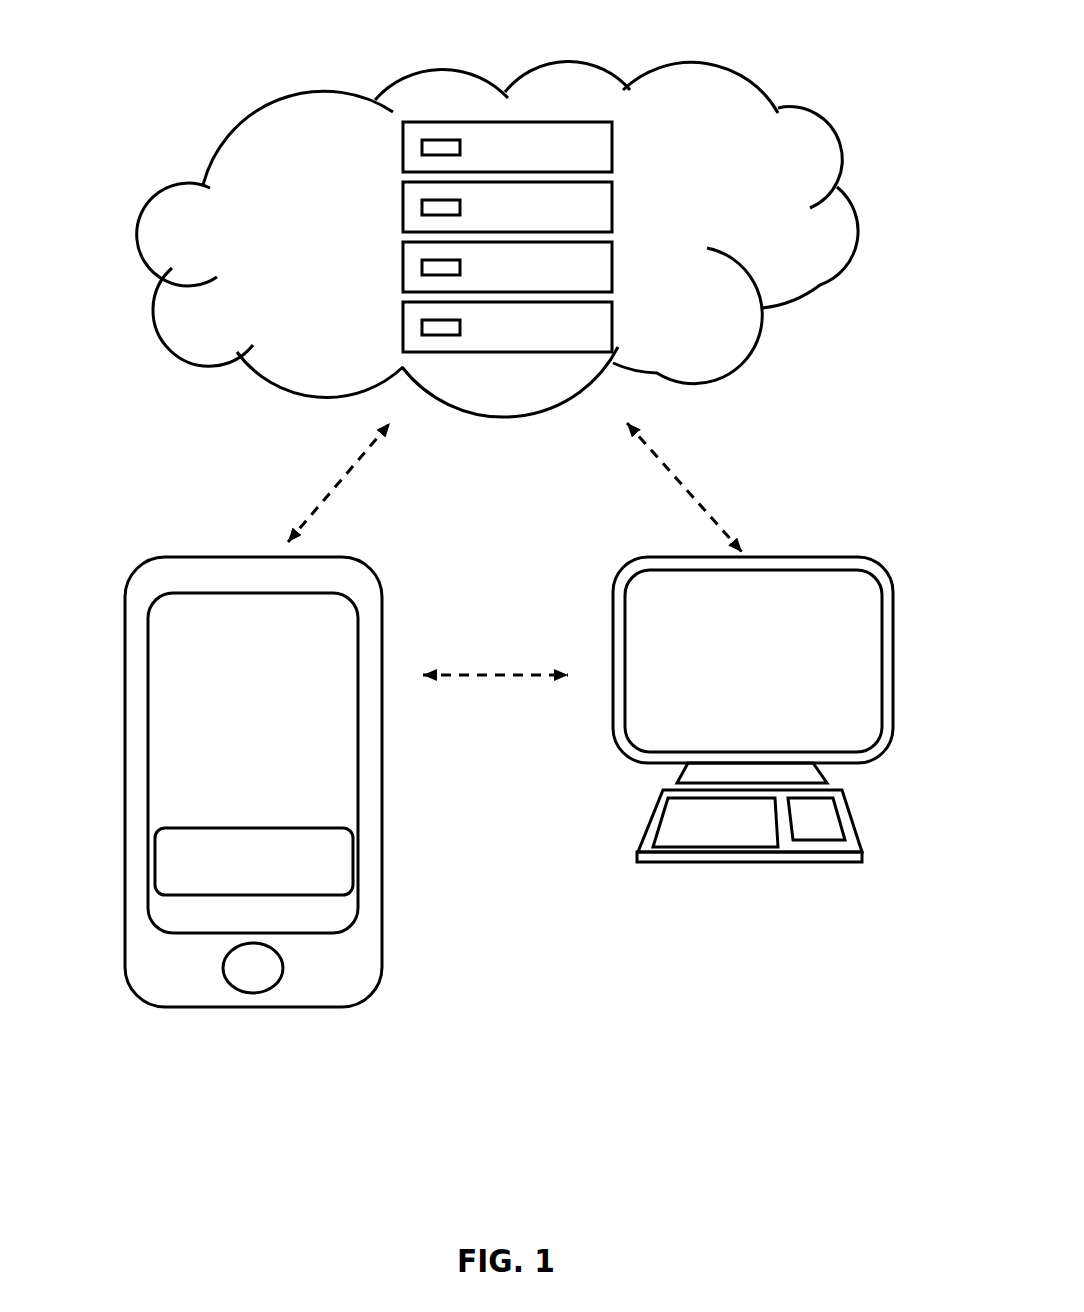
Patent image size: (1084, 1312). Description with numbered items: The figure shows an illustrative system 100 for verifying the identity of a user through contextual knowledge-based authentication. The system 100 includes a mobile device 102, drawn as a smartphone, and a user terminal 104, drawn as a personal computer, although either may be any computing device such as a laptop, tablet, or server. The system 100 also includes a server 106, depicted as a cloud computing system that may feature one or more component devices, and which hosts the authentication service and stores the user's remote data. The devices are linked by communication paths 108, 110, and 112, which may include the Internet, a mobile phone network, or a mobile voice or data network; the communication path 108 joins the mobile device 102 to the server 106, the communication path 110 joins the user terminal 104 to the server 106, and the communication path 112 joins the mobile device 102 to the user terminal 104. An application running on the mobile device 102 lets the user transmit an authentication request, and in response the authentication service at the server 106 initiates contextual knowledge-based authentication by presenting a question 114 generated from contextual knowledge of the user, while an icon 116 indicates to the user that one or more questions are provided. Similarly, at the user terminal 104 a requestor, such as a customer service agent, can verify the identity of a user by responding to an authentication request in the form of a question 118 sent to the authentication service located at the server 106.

The system 100 is at (502, 34).
The mobile device 102 is at (213, 740).
The user terminal 104 is at (790, 670).
The server 106 is at (800, 173).
The communication path 108 is at (310, 455).
The communication path 110 is at (695, 440).
The communication path 112 is at (478, 657).
The question 114 is at (190, 663).
The icon 116 is at (180, 848).
The question 118 is at (855, 652).